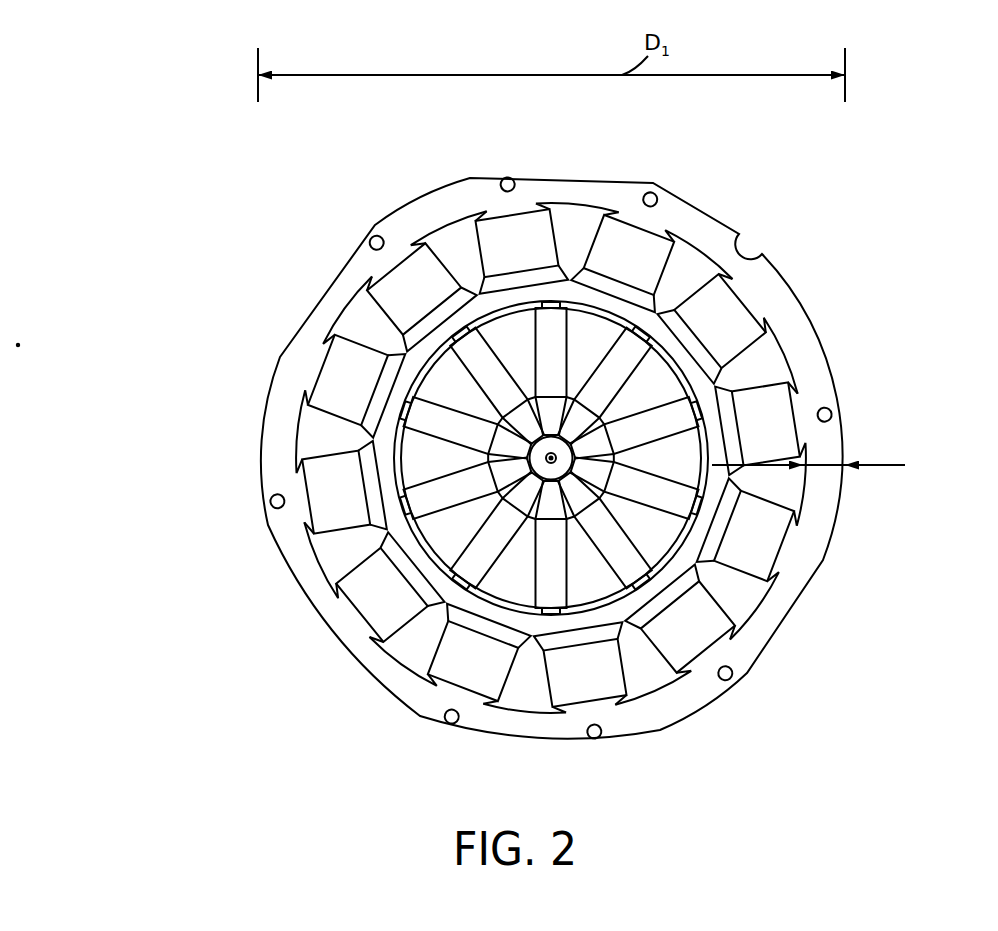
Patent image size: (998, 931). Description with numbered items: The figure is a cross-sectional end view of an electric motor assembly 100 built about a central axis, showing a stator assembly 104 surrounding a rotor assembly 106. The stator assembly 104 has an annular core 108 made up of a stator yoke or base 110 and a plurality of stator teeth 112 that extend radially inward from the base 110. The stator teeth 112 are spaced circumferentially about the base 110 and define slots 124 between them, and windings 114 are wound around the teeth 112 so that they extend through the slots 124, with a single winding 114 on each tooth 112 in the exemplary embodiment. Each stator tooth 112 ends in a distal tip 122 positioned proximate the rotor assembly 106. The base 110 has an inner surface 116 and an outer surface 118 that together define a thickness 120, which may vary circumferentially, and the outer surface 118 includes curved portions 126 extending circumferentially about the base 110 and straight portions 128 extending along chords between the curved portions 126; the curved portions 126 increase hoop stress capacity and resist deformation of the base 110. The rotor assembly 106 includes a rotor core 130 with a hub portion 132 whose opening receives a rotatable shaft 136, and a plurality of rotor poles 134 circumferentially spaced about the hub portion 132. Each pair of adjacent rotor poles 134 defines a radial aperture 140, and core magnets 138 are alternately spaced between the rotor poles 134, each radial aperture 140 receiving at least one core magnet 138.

The electric motor assembly 100 is at (886, 189).
The stator assembly 104 is at (323, 247).
The rotor assembly 106 is at (723, 407).
The annular core 108 is at (305, 555).
The stator base 110 is at (665, 710).
The stator teeth 112 is at (473, 665).
The windings 114 is at (473, 665).
The inner surface 116 is at (760, 620).
The outer surface 118 is at (787, 613).
The thickness 120 is at (860, 464).
The distal tip 122 is at (392, 545).
The slots 124 is at (533, 672).
The curved portions 126 is at (262, 470).
The straight portions 128 is at (303, 318).
The rotor core 130 is at (462, 383).
The hub portion 132 is at (600, 402).
The rotor poles 134 is at (868, 467).
The rotatable shaft 136 is at (535, 457).
The core magnets 138 is at (628, 346).
The radial aperture 140 is at (478, 318).